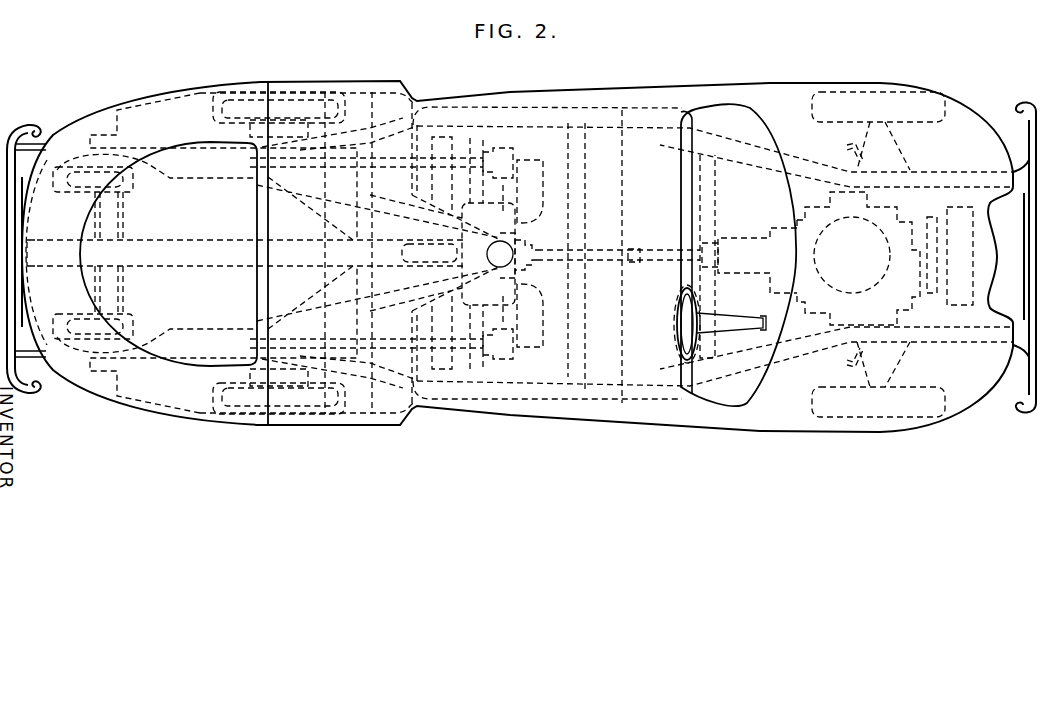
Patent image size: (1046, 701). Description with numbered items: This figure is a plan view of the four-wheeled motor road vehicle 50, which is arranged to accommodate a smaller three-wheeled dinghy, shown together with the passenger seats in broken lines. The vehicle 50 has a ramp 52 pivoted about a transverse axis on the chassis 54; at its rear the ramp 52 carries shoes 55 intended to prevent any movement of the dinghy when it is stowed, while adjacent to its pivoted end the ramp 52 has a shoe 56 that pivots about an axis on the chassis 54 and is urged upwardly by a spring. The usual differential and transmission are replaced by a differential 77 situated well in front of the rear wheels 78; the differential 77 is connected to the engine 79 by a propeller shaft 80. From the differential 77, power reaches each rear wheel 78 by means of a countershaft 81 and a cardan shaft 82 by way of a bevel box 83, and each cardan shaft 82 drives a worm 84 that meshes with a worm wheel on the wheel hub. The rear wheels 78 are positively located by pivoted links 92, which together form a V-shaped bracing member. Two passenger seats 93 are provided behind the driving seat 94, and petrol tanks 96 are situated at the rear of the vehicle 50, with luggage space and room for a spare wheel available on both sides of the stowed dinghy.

The four-wheeled motor road vehicle 50 is at (780, 117).
The ramp 52 is at (183, 257).
The chassis 54 is at (372, 100).
The shoes 55 is at (60, 163).
The shoe 56 is at (452, 110).
The differential 77 is at (467, 300).
The rear wheels 78 is at (282, 106).
The engine 79 is at (860, 250).
The propeller shaft 80 is at (530, 245).
The countershaft 81 is at (503, 188).
The cardan shaft 82 is at (397, 135).
The bevel box 83 is at (503, 158).
The worm 84 is at (260, 133).
The pivoted links 92 is at (325, 120).
The passenger seats 93 is at (497, 140).
The driving seat 94 is at (640, 160).
The petrol tanks 96 is at (150, 120).